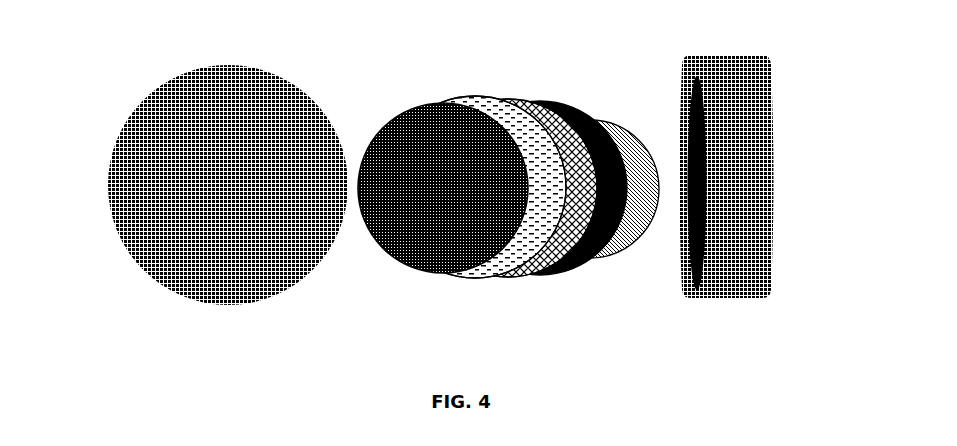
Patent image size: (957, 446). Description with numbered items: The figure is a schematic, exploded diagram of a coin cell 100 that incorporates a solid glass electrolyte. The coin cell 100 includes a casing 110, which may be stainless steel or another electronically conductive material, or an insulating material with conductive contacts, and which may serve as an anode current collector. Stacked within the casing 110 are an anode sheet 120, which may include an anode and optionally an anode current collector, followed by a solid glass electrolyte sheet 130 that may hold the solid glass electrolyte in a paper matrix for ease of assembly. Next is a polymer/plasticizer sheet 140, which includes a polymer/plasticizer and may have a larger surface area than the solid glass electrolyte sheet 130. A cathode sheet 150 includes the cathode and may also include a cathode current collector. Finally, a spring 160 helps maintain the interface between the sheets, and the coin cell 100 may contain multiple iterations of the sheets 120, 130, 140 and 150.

The coin cell 100 is at (488, 222).
The casing 110 is at (802, 186).
The anode sheet 120 is at (443, 188).
The solid glass electrolyte sheet 130 is at (512, 253).
The polymer/plasticizer sheet 140 is at (563, 238).
The cathode sheet 150 is at (580, 265).
The spring 160 is at (634, 224).